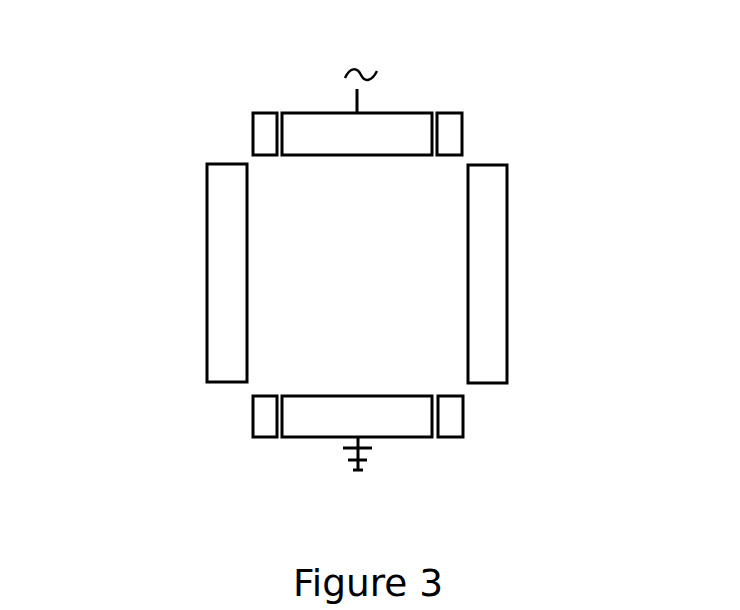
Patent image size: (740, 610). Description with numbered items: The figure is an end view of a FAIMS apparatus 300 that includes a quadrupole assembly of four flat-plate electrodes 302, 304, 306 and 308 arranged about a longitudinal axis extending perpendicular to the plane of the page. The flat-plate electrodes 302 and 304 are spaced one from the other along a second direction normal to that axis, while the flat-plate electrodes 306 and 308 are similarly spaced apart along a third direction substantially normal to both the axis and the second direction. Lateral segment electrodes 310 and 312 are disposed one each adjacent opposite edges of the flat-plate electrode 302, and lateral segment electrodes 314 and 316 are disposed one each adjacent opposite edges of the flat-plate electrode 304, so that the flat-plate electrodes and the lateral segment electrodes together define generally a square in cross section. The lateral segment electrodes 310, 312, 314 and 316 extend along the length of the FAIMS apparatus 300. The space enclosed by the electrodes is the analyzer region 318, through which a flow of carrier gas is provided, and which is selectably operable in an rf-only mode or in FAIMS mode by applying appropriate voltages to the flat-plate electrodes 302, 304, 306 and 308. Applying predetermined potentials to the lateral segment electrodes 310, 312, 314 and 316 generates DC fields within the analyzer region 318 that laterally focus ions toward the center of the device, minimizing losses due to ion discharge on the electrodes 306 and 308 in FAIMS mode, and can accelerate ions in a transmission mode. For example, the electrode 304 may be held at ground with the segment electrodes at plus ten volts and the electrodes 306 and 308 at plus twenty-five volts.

The FAIMS apparatus 300 is at (113, 133).
The flat-plate electrode 302 is at (407, 127).
The flat-plate electrode 304 is at (420, 417).
The flat-plate electrode 306 is at (491, 350).
The flat-plate electrode 308 is at (227, 343).
The lateral segment electrode 310 is at (265, 128).
The lateral segment electrode 312 is at (450, 137).
The lateral segment electrode 314 is at (264, 425).
The lateral segment electrode 316 is at (452, 415).
The analyzer region 318 is at (297, 333).